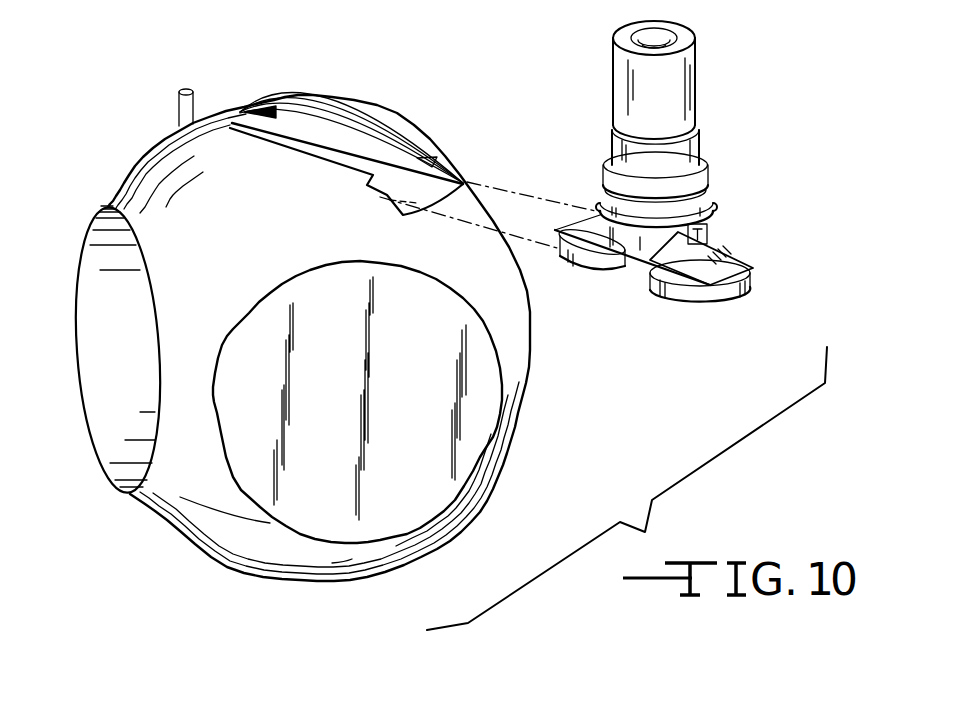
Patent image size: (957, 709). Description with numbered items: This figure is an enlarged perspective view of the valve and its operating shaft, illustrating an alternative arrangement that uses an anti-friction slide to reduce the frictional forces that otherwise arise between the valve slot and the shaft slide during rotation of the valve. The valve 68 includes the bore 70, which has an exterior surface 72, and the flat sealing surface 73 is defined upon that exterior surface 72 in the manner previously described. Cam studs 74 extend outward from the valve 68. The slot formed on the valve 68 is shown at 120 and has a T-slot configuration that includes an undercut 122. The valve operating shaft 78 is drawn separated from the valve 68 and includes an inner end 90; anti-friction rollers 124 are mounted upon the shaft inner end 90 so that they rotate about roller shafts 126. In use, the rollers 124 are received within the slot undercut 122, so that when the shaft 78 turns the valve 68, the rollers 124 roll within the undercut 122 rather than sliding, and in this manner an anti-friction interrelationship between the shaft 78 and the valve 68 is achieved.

The valve 68 is at (245, 586).
The bore 70 is at (107, 392).
The exterior surface 72 is at (202, 530).
The flat sealing surface 73 is at (422, 494).
The cam studs 74 is at (177, 113).
The valve operating shaft 78 is at (707, 73).
The inner end 90 is at (660, 245).
The slot 120 is at (367, 142).
The undercut 122 is at (390, 195).
The anti-friction rollers 124 is at (587, 277).
The roller shafts 126 is at (708, 232).